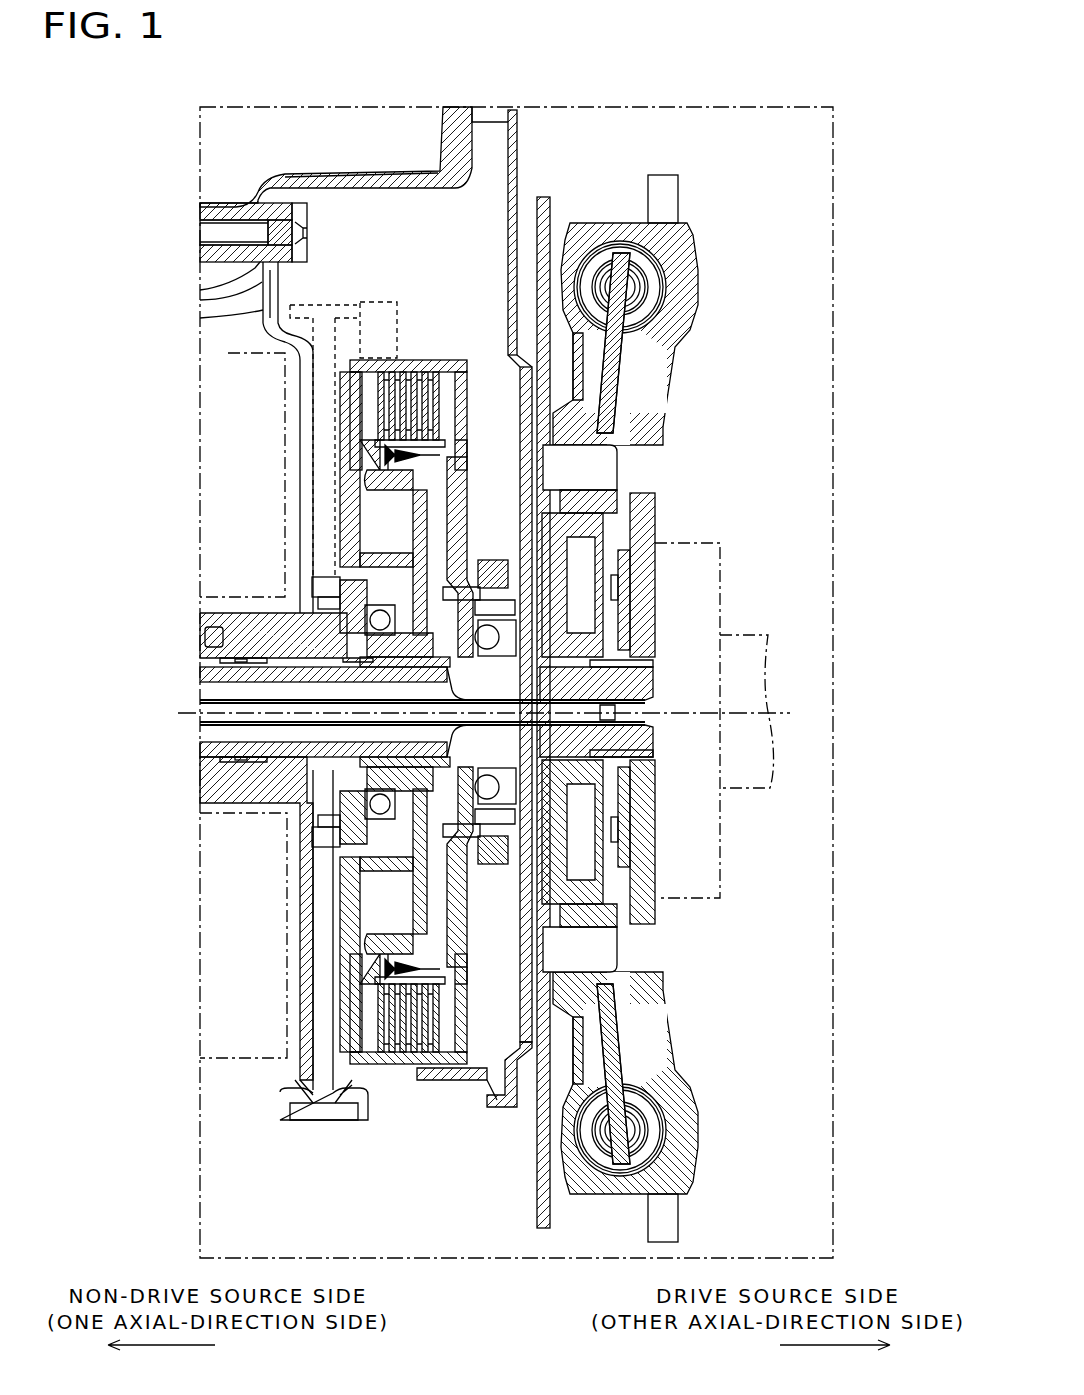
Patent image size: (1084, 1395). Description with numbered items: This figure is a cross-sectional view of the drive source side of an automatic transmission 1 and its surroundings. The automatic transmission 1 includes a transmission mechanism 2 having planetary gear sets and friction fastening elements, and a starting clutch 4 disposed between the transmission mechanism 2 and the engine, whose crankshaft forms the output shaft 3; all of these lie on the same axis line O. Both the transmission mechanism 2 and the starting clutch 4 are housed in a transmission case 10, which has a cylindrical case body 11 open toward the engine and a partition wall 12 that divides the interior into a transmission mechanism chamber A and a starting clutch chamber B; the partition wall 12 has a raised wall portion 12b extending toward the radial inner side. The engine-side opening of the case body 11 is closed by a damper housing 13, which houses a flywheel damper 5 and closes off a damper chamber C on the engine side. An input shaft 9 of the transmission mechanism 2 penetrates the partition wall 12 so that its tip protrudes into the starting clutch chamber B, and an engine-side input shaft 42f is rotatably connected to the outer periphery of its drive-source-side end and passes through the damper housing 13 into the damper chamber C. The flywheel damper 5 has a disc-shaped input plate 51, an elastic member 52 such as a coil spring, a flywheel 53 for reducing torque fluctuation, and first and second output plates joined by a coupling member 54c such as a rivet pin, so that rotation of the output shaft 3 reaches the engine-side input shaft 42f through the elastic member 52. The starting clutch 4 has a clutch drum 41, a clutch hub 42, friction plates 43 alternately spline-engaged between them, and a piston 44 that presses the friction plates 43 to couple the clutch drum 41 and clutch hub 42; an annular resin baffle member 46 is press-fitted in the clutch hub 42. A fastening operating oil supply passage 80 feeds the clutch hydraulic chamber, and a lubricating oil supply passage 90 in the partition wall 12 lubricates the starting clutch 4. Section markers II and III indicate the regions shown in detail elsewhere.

The automatic transmission 1 is at (230, 151).
The transmission mechanism 2 is at (228, 353).
The output shaft 3 is at (708, 528).
The starting clutch 4 is at (371, 457).
The flywheel damper 5 is at (738, 262).
The input shaft 9 is at (210, 745).
The transmission case 10 is at (307, 161).
The case body 11 is at (357, 176).
The partition wall 12 is at (267, 315).
The raised wall portion 12b is at (250, 622).
The damper housing 13 is at (505, 233).
The clutch drum 41 is at (348, 462).
The clutch hub 42 is at (458, 538).
The engine-side input shaft 42f is at (630, 687).
The friction plates 43 is at (428, 385).
The piston 44 is at (418, 518).
The baffle member 46 is at (388, 452).
The input plate 51 is at (658, 405).
The elastic member 52 is at (605, 250).
The flywheel 53 is at (548, 200).
The coupling member 54c is at (600, 463).
The fastening operating oil supply passage 80 is at (342, 296).
The lubricating oil supply passage 90 is at (328, 1132).
The transmission mechanism chamber A is at (249, 291).
The starting clutch chamber B is at (399, 206).
The damper chamber C is at (547, 126).
The axis line O is at (791, 712).
The section II is at (198, 181).
The section III is at (198, 882).